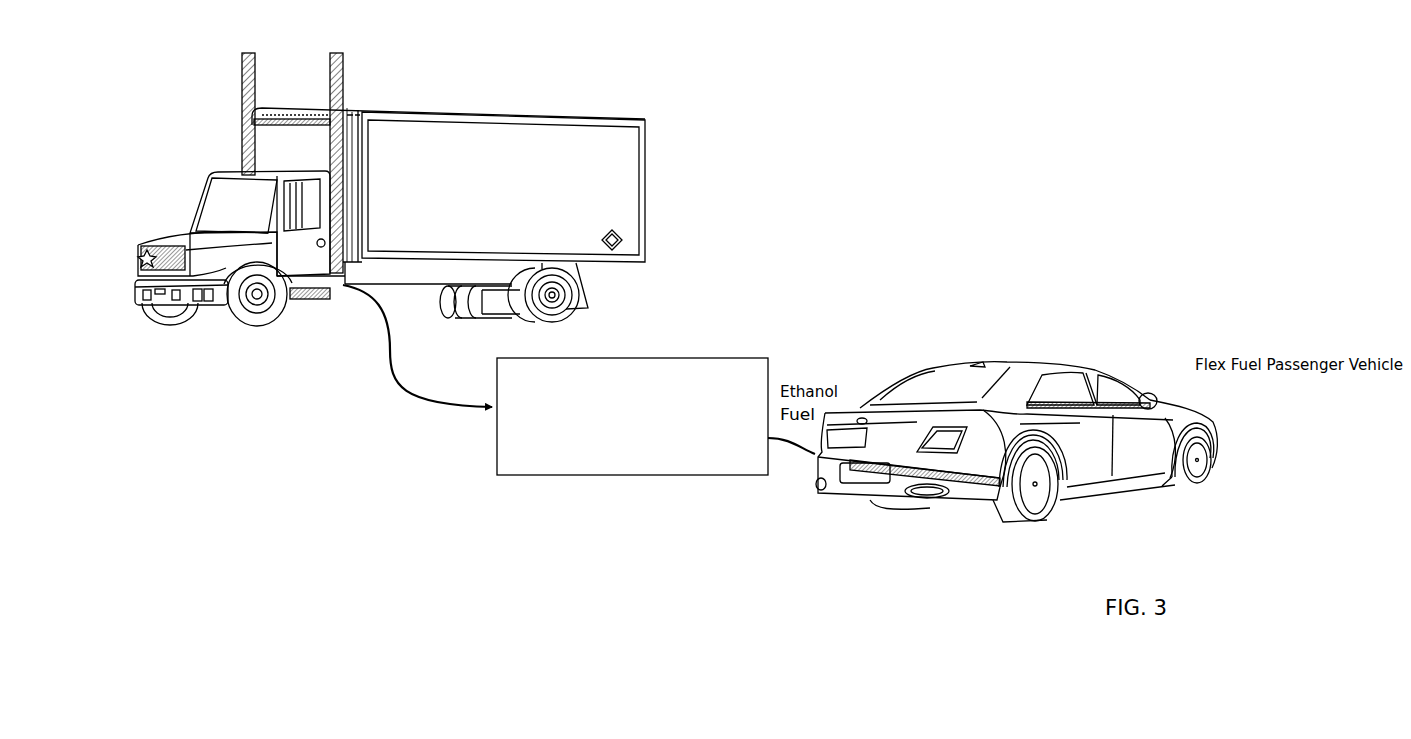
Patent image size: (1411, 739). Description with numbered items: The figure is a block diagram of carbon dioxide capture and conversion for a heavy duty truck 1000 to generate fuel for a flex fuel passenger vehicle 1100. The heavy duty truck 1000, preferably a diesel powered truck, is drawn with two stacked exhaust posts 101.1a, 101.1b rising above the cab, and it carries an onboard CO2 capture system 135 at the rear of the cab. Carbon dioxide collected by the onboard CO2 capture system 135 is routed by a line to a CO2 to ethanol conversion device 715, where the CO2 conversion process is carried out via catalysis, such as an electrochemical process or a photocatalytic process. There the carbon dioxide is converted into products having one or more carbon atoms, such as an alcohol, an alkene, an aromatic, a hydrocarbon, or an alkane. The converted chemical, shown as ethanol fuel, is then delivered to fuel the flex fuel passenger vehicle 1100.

The exhaust stack post 101.1b is at (231, 92).
The exhaust stack post 101.1a is at (341, 86).
The heavy duty truck 1000 is at (605, 120).
The onboard CO2 capture system 135 is at (345, 256).
The CO2 to ethanol conversion device 715 is at (632, 416).
The flex fuel passenger vehicle 1100 is at (1166, 363).